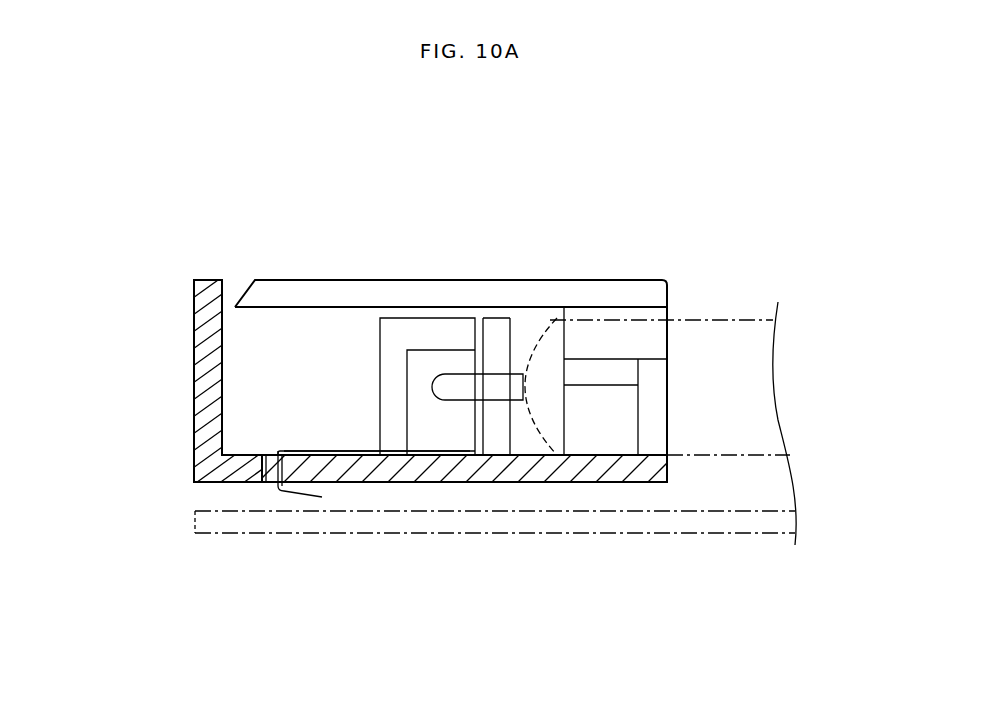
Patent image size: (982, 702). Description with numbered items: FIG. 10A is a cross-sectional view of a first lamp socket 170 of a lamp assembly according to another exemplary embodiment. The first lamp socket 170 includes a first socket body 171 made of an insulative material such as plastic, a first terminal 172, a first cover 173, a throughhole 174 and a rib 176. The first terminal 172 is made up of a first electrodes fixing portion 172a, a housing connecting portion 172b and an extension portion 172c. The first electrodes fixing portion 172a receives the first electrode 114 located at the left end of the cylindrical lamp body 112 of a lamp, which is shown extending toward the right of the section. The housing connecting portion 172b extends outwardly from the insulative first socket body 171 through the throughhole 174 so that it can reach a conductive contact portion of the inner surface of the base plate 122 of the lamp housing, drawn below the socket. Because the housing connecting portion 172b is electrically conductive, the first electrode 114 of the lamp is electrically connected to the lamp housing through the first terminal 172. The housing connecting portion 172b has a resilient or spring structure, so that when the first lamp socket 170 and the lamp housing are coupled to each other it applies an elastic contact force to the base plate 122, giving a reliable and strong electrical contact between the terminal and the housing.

The first lamp socket 170 is at (192, 314).
The first socket body 171 is at (203, 373).
The first terminal 172 is at (433, 178).
The first electrodes fixing portion 172a is at (428, 353).
The housing connecting portion 172b is at (263, 482).
The extension portion 172c is at (332, 448).
The first cover 173 is at (610, 279).
The throughhole 174 is at (265, 484).
The rib 176 is at (397, 442).
The first electrode 114 is at (495, 373).
The lamp body 112 is at (733, 320).
The base plate 122 is at (490, 535).